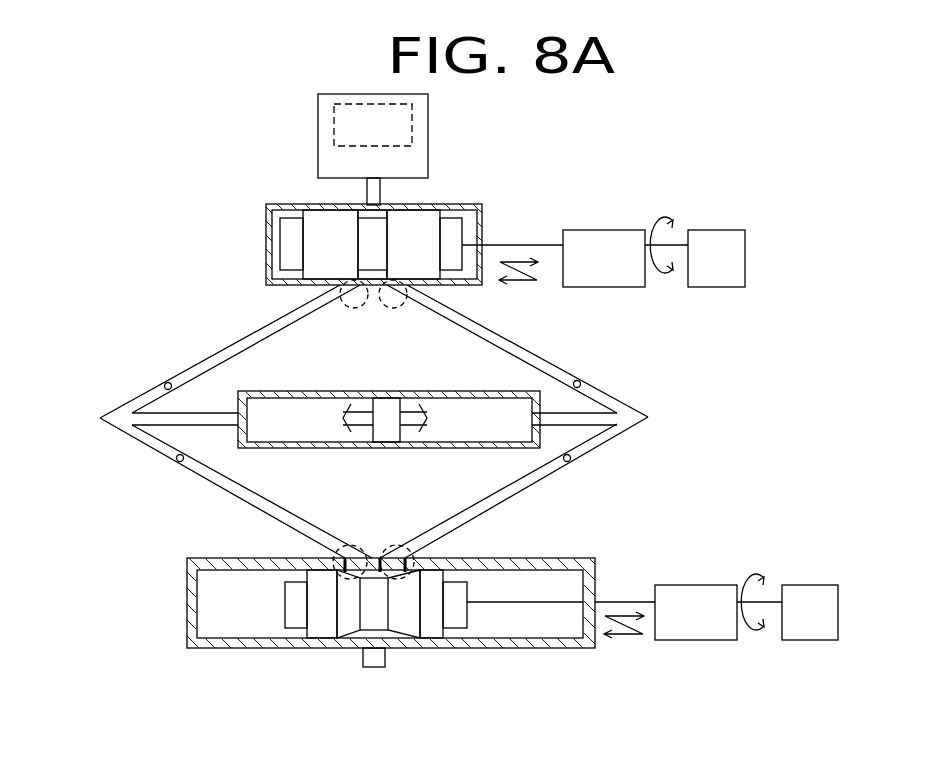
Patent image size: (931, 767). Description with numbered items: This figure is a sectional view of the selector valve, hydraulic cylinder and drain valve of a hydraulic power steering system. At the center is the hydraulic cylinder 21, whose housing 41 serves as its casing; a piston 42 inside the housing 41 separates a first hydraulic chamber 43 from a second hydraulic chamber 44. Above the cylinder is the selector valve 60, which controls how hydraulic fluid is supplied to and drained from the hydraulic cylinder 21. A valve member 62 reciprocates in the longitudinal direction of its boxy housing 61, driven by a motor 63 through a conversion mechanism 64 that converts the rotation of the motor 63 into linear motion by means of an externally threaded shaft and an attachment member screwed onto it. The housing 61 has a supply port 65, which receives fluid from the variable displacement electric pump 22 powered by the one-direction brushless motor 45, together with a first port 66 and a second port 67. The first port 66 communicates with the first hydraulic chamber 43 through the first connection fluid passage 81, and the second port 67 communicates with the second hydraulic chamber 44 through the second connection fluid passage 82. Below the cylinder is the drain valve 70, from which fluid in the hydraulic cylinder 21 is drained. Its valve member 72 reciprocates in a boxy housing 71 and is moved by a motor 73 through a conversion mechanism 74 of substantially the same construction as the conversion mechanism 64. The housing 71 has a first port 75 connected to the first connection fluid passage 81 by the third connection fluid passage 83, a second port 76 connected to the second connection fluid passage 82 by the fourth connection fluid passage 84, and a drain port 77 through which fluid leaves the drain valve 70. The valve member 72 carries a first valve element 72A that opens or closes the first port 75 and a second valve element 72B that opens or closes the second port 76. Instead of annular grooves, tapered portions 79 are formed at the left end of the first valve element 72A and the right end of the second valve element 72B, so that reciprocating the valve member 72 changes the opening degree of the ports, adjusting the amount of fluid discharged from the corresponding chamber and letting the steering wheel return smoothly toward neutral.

The hydraulic cylinder 21 is at (374, 415).
The variable displacement electric pump 22 is at (422, 149).
The housing 41 is at (437, 390).
The piston 42 is at (388, 442).
The first hydraulic chamber 43 is at (492, 442).
The second hydraulic chamber 44 is at (288, 440).
The motor 45 is at (412, 115).
The selector valve 60 is at (386, 217).
The housing 61 is at (266, 245).
The valve member 62 is at (313, 222).
The motor 63 is at (745, 258).
The conversion mechanism 64 is at (600, 230).
The supply port 65 is at (382, 205).
The first port 66 is at (400, 290).
The second port 67 is at (347, 290).
The drain valve 70 is at (385, 618).
The housing 71 is at (210, 648).
The valve member 72 is at (359, 634).
The first valve element 72A is at (428, 630).
The second valve element 72B is at (318, 625).
The motor 73 is at (838, 610).
The conversion mechanism 74 is at (697, 585).
The first port 75 is at (398, 550).
The second port 76 is at (343, 550).
The drain port 77 is at (380, 667).
The tapered portions 79 is at (347, 630).
The first connection fluid passage 81 is at (580, 384).
The second connection fluid passage 82 is at (165, 386).
The third connection fluid passage 83 is at (569, 462).
The fourth connection fluid passage 84 is at (178, 462).